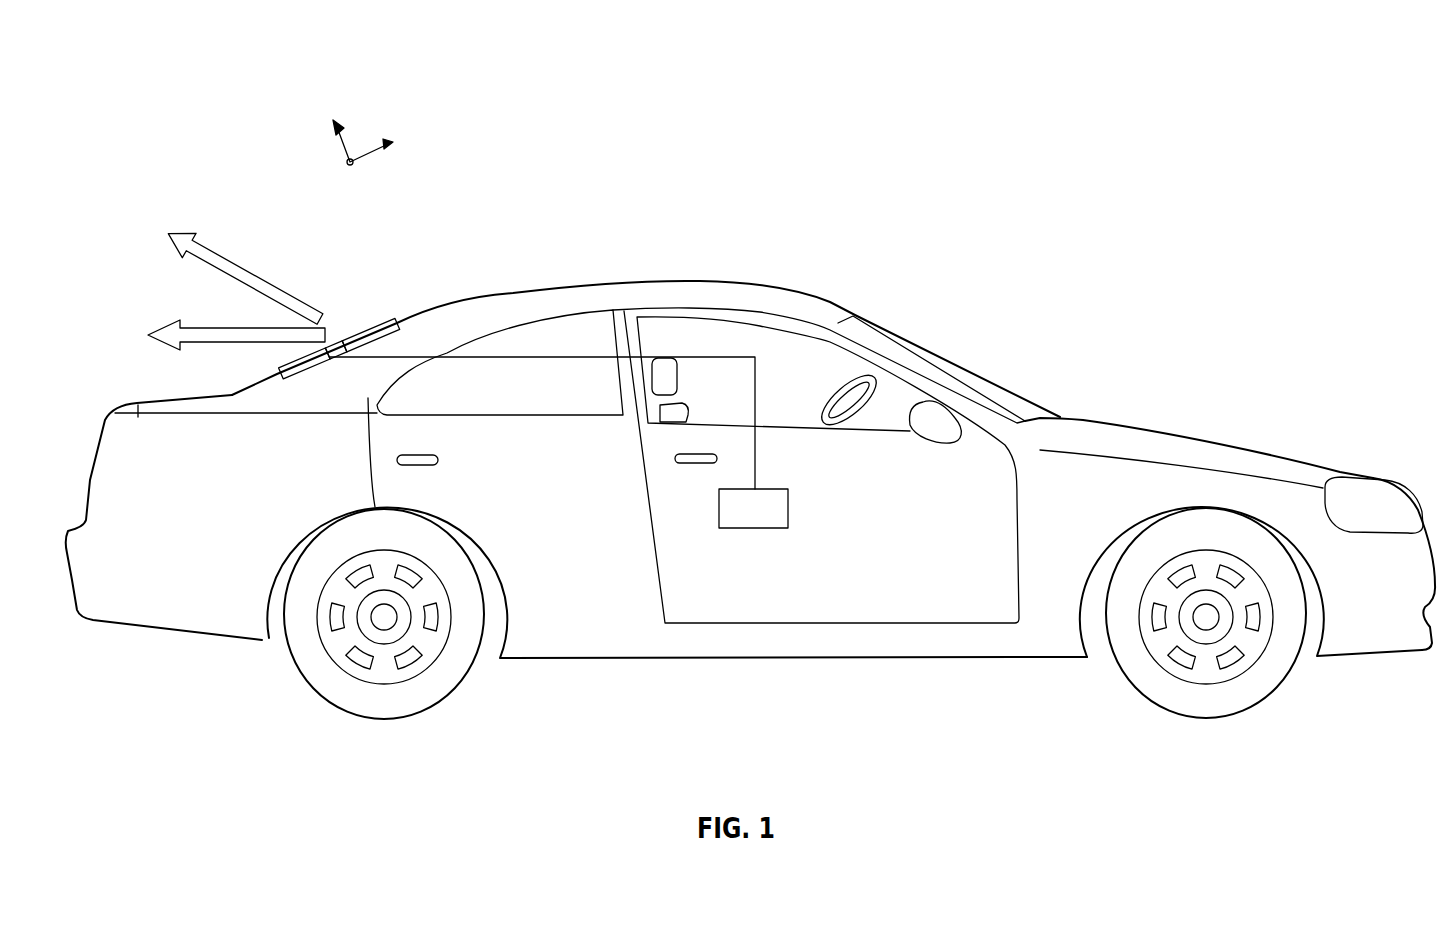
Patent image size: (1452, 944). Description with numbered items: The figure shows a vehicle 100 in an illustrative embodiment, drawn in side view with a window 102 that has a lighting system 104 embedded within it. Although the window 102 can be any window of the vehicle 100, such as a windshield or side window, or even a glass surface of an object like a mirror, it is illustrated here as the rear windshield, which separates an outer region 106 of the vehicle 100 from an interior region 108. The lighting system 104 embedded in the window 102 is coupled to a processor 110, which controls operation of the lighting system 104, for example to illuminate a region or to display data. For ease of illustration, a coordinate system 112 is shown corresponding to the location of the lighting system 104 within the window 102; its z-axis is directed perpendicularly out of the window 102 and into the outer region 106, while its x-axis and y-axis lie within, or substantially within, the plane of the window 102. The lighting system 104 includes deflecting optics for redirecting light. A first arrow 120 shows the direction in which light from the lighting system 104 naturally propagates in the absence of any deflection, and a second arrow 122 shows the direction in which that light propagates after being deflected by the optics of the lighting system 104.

The vehicle 100 is at (214, 125).
The window 102 is at (410, 318).
The lighting system 104 is at (340, 356).
The outer region 106 is at (1247, 411).
The interior region 108 is at (765, 389).
The processor 110 is at (752, 530).
The coordinate system 112 is at (364, 126).
The first arrow 120 is at (178, 246).
The second arrow 122 is at (165, 346).